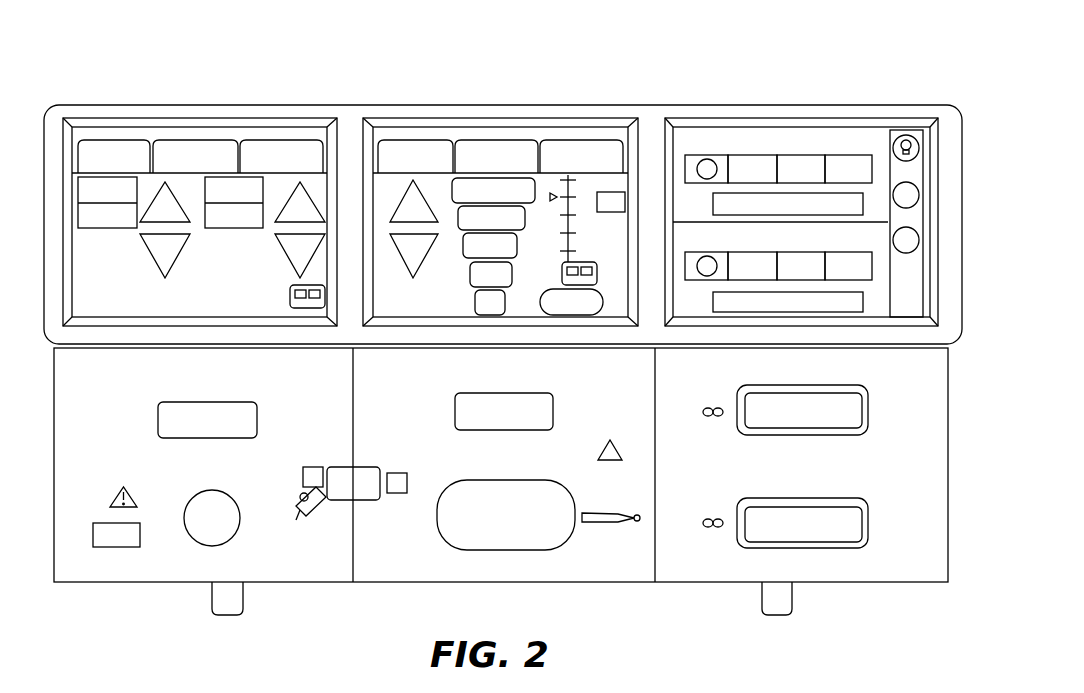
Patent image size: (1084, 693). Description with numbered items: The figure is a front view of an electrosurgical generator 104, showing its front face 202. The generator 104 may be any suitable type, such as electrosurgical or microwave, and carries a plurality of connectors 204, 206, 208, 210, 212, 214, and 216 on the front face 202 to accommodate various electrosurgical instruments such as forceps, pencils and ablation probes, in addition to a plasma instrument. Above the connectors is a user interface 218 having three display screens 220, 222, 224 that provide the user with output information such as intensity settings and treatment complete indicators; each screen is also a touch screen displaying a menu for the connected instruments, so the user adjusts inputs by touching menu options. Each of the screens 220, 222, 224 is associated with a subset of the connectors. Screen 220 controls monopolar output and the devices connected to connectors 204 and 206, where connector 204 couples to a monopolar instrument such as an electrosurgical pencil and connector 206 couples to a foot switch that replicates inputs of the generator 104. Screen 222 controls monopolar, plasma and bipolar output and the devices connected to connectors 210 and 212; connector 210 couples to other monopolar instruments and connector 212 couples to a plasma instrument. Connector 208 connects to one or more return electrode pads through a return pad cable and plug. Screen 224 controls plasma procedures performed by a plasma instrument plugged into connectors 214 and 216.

The generator 104 is at (832, 88).
The front face 202 is at (198, 105).
The connector 204 is at (178, 402).
The connector 206 is at (240, 515).
The connector 208 is at (337, 467).
The connector 210 is at (477, 393).
The connector 212 is at (437, 513).
The connector 214 is at (868, 410).
The connector 216 is at (868, 523).
The user interface 218 is at (532, 88).
The display screen 220 is at (115, 118).
The display screen 222 is at (417, 118).
The display screen 224 is at (717, 118).